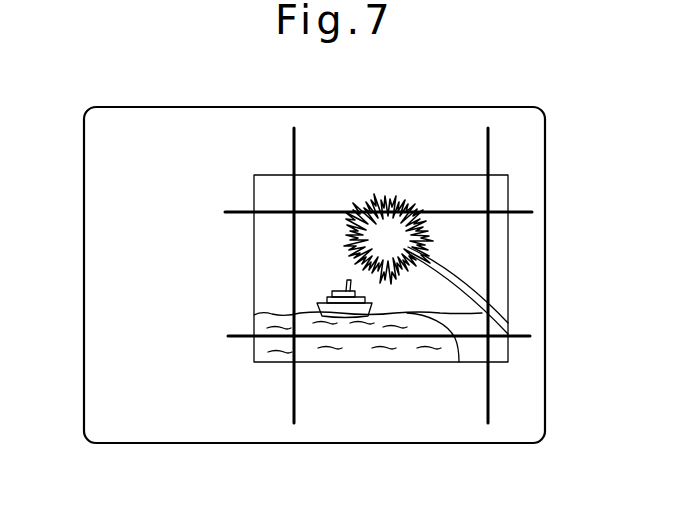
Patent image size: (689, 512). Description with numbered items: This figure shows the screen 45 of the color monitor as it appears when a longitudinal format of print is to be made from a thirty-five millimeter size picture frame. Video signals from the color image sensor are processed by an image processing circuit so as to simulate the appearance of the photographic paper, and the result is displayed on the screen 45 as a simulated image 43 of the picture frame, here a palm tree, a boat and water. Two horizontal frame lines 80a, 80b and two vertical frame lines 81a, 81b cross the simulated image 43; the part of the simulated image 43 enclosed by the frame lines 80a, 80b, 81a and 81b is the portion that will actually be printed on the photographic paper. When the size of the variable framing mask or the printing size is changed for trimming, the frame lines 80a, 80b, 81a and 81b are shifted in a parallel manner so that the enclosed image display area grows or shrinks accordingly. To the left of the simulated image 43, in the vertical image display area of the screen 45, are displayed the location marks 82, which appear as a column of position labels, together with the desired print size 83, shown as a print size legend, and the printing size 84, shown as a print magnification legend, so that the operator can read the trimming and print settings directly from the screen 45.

The simulated image 43 is at (458, 185).
The screen 45 is at (536, 157).
The frame line 80a is at (531, 214).
The frame line 80b is at (529, 338).
The frame line 81a is at (296, 415).
The frame line 81b is at (490, 415).
The location marks 82 is at (107, 301).
The desired print size 83 is at (88, 390).
The printing size 84 is at (88, 415).